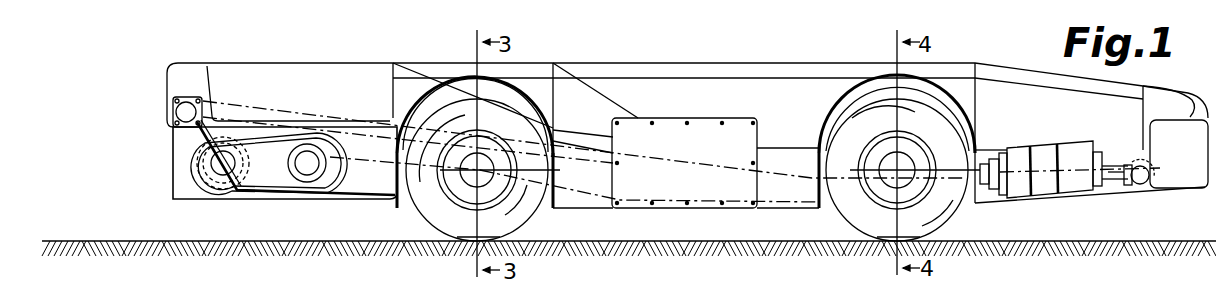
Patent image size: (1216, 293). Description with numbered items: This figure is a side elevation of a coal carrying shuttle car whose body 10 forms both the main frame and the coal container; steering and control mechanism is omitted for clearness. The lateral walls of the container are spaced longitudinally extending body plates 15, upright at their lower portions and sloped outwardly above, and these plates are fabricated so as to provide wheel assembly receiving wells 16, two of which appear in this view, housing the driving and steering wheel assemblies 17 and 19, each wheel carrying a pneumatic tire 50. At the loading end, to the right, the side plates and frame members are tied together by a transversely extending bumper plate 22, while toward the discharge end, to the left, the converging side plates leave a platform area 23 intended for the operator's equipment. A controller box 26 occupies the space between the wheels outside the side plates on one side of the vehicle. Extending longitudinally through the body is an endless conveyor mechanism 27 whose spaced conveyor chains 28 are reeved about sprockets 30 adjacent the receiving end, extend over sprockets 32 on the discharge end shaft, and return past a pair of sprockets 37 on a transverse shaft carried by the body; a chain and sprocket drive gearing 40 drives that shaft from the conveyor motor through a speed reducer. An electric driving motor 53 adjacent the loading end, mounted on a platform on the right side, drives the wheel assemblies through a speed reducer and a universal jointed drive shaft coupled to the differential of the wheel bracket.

The body 10 is at (672, 62).
The body plates 15 is at (742, 90).
The wheel assembly receiving wells 16 is at (870, 94).
The driving and steering wheel assembly 17 is at (950, 218).
The driving and steering wheel assembly 19 is at (433, 202).
The bumper plate 22 is at (1179, 154).
The platform area 23 is at (374, 185).
The controller box 26 is at (684, 163).
The endless conveyor mechanism 27 is at (356, 118).
The conveyor chains 28 is at (663, 166).
The sprockets 30 is at (1160, 190).
The sprockets 32 is at (181, 95).
The sprockets 37 is at (308, 177).
The chain and sprocket drive gearing 40 is at (264, 181).
The pneumatic tire 50 is at (863, 219).
The electric driving motor 53 is at (1042, 147).